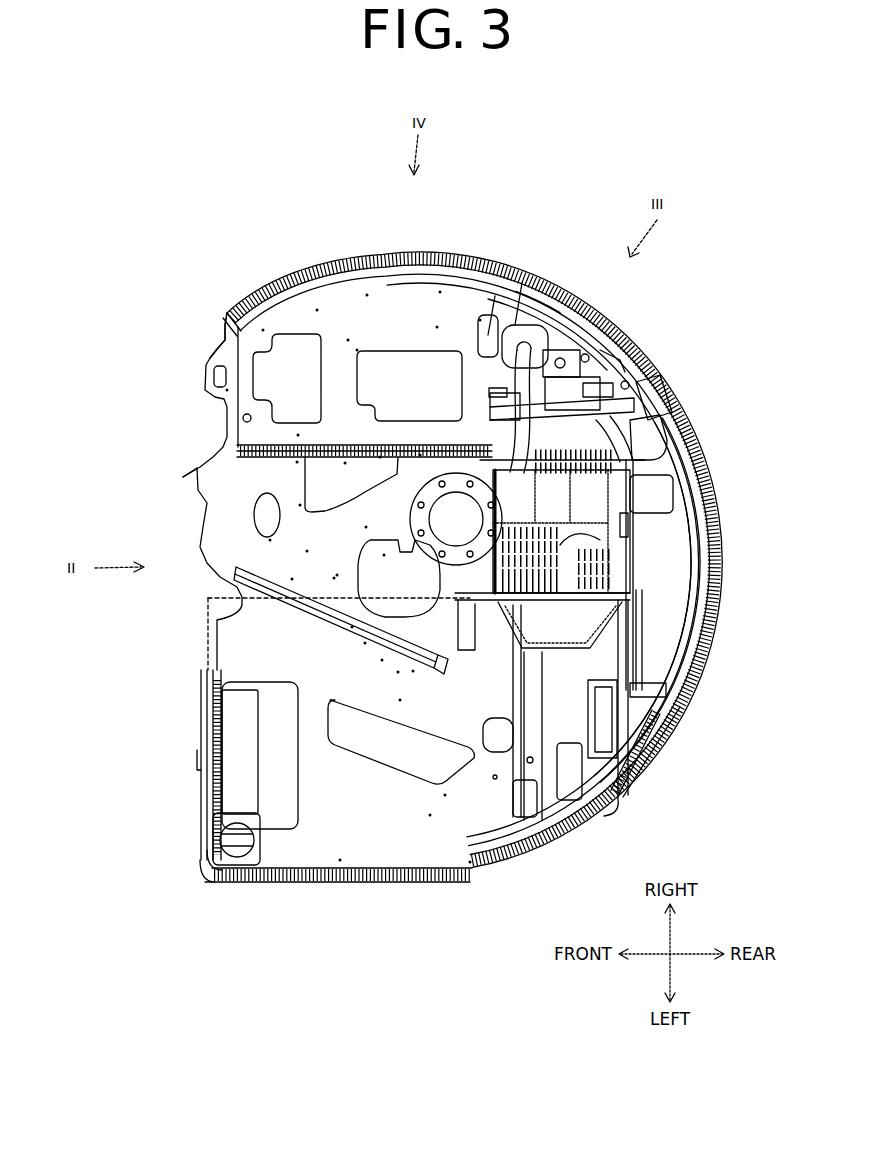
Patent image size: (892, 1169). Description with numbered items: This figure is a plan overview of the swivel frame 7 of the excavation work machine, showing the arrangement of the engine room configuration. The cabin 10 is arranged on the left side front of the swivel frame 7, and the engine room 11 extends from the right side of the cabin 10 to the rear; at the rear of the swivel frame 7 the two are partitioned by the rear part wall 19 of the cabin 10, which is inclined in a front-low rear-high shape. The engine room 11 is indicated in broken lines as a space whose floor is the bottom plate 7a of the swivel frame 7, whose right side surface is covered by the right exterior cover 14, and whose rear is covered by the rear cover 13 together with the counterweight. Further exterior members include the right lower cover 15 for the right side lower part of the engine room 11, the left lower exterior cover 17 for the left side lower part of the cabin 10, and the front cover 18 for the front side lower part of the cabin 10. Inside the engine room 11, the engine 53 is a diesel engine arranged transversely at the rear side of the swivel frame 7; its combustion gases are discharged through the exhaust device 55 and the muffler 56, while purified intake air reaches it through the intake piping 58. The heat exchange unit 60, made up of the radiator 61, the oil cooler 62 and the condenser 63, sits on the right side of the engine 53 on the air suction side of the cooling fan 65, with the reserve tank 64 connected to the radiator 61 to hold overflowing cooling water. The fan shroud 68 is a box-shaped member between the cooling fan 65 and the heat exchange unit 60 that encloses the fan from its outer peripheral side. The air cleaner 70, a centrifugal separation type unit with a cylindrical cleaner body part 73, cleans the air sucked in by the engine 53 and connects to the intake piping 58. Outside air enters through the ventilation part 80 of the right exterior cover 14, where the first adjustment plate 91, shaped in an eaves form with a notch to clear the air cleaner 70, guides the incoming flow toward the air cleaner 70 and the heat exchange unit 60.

The swivel frame 7 is at (200, 473).
The bottom plate 7a is at (150, 489).
The cabin 10 is at (410, 880).
The engine room 11 is at (213, 326).
The rear cover 13 is at (720, 633).
The right exterior cover 14 is at (356, 257).
The right lower cover 15 is at (245, 297).
The left lower exterior cover 17 is at (293, 884).
The front cover 18 is at (207, 740).
The rear part wall 19 is at (645, 742).
The engine 53 is at (653, 560).
The exhaust device 55 is at (593, 505).
The muffler 56 is at (680, 507).
The intake piping 58 is at (483, 381).
The heat exchange unit 60 is at (690, 357).
The radiator 61 is at (657, 387).
The oil cooler 62 is at (490, 426).
The condenser 63 is at (617, 367).
The reserve tank 64 is at (600, 343).
The cooling fan 65 is at (620, 457).
The fan shroud 68 is at (663, 415).
The air cleaner 70 is at (478, 308).
The cleaner body part 73 is at (520, 285).
The ventilation part 80 is at (552, 287).
The first adjustment plate 91 is at (587, 320).